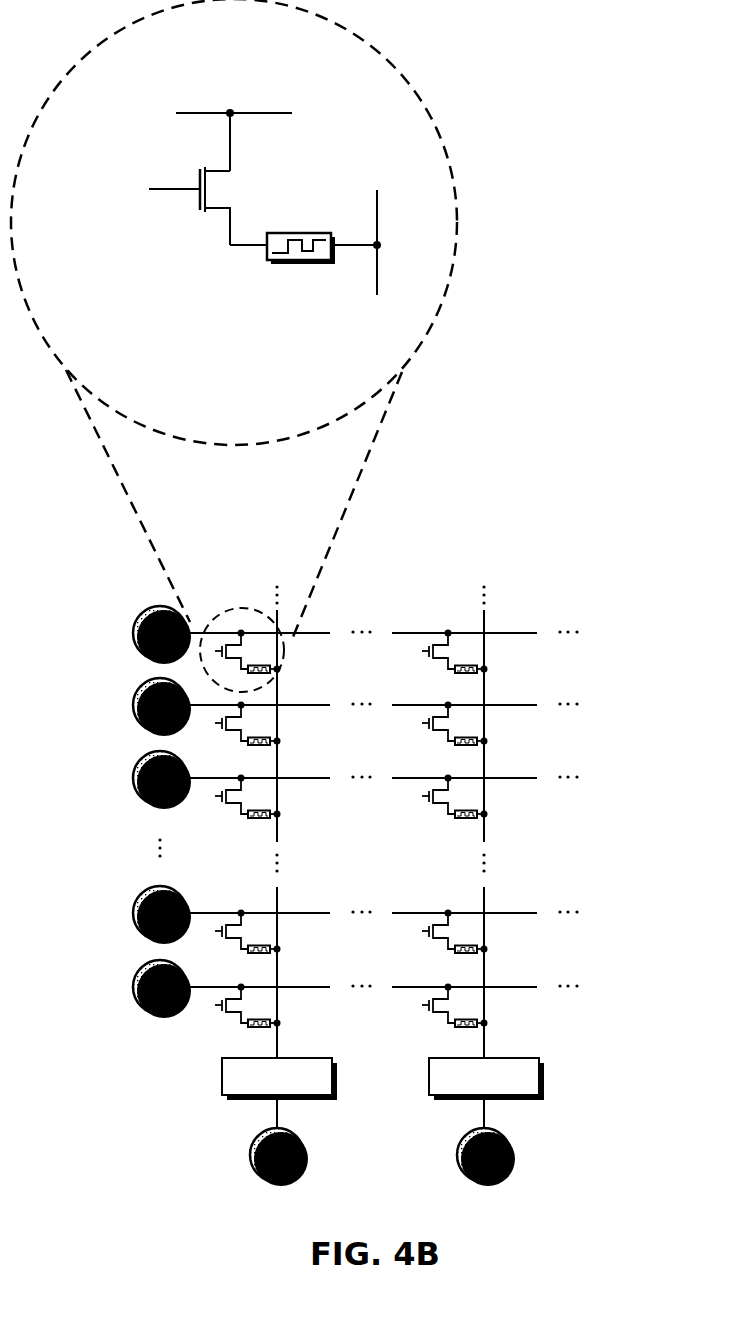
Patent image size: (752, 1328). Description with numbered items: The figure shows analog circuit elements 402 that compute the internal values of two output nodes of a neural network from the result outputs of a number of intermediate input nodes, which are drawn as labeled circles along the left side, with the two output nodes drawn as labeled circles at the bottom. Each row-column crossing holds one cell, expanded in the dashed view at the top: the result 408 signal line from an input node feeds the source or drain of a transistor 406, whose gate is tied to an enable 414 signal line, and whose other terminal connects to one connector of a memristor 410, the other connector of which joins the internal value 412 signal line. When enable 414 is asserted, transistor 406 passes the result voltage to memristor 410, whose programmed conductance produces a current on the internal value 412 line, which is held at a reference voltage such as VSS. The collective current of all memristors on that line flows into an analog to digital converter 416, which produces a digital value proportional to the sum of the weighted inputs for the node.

The analog circuit elements 402 is at (406, 578).
The transistor 406 is at (189, 222).
The result signal line 408 is at (189, 128).
The memristor 410 is at (294, 265).
The internal value signal line 412 is at (377, 200).
The enable signal line 414 is at (128, 188).
The analog to digital converter 416 is at (383, 1079).